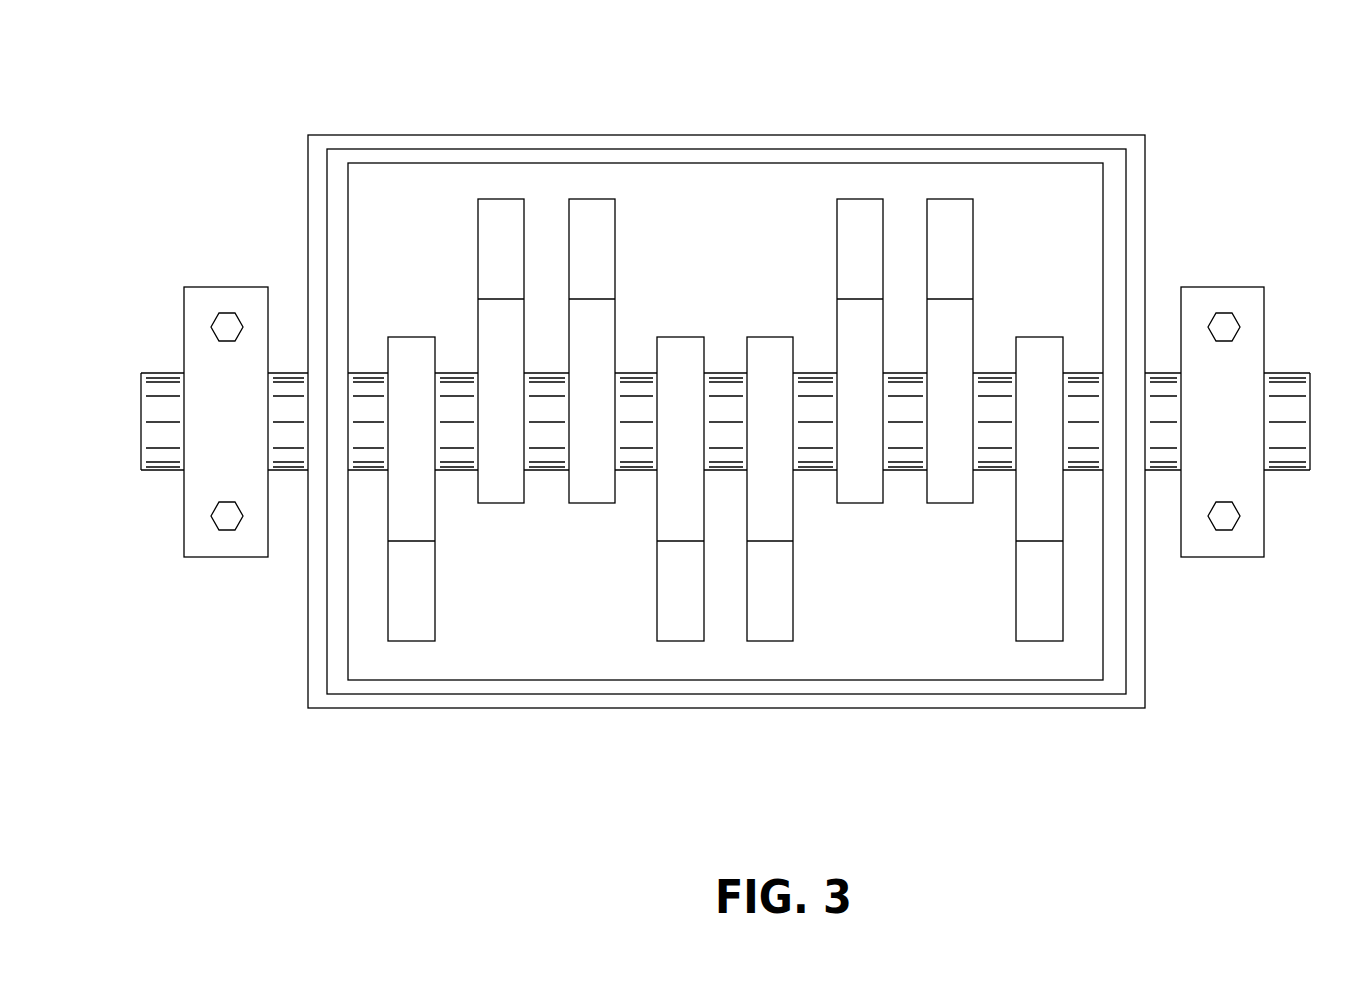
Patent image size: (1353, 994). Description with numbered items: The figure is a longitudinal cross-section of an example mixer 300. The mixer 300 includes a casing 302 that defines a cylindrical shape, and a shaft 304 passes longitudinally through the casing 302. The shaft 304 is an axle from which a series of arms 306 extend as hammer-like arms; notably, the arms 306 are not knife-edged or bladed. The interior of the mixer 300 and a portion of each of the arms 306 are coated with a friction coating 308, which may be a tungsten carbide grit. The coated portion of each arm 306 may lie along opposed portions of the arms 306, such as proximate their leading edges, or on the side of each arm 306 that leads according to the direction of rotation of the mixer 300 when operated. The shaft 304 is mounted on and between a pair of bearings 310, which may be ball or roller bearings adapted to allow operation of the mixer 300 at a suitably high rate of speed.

The example mixer 300 is at (1156, 95).
The casing 302 is at (862, 133).
The shaft 304 is at (173, 433).
The arms 306 is at (412, 452).
The friction coating 308 is at (486, 157).
The bearings 310 is at (237, 286).